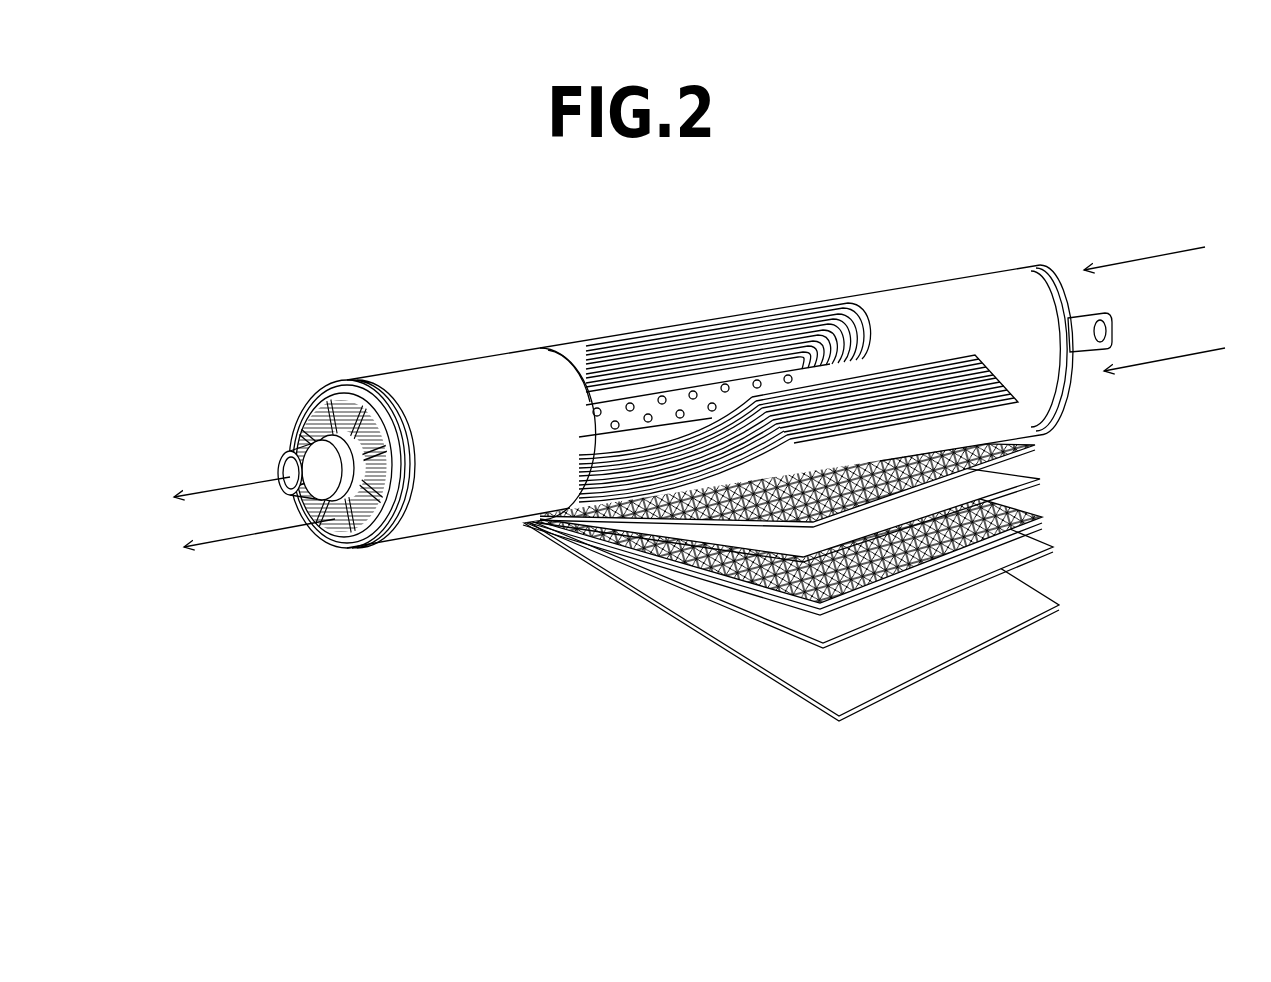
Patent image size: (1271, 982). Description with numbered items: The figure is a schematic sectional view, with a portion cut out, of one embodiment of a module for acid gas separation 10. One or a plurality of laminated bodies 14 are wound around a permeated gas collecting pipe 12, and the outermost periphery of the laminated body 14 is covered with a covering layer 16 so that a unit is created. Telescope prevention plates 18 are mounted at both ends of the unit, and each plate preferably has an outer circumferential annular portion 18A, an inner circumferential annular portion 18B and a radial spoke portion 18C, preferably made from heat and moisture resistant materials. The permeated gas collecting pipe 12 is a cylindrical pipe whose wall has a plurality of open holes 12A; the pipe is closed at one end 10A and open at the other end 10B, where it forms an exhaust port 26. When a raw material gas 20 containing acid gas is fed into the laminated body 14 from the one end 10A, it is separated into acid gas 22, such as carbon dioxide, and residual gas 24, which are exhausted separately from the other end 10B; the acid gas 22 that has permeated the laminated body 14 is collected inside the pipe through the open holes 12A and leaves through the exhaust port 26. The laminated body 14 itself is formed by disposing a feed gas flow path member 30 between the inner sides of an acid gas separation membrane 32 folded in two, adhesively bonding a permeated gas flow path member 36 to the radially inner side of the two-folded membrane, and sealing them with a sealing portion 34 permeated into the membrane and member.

The module for acid gas separation 10 is at (1013, 157).
The one end 10A is at (1072, 402).
The other end 10B is at (338, 541).
The permeated gas collecting pipe 12 is at (786, 330).
The open holes 12A is at (588, 437).
The laminated body 14 is at (850, 534).
The covering layer 16 is at (1060, 602).
The telescope prevention plate 18 is at (1025, 268).
The outer circumferential annular portion 18A is at (355, 385).
The inner circumferential annular portion 18B is at (328, 388).
The radial spoke portion 18C is at (309, 410).
The raw material gas 20 is at (1134, 258).
The acid gas 22 is at (212, 485).
The residual gas 24 is at (228, 548).
The exhaust port 26 is at (279, 492).
The feed gas flow path member 30 is at (1017, 498).
The acid gas separation membrane 32 is at (1040, 532).
The sealing portion 34 is at (1027, 463).
The permeated gas flow path member 36 is at (831, 481).